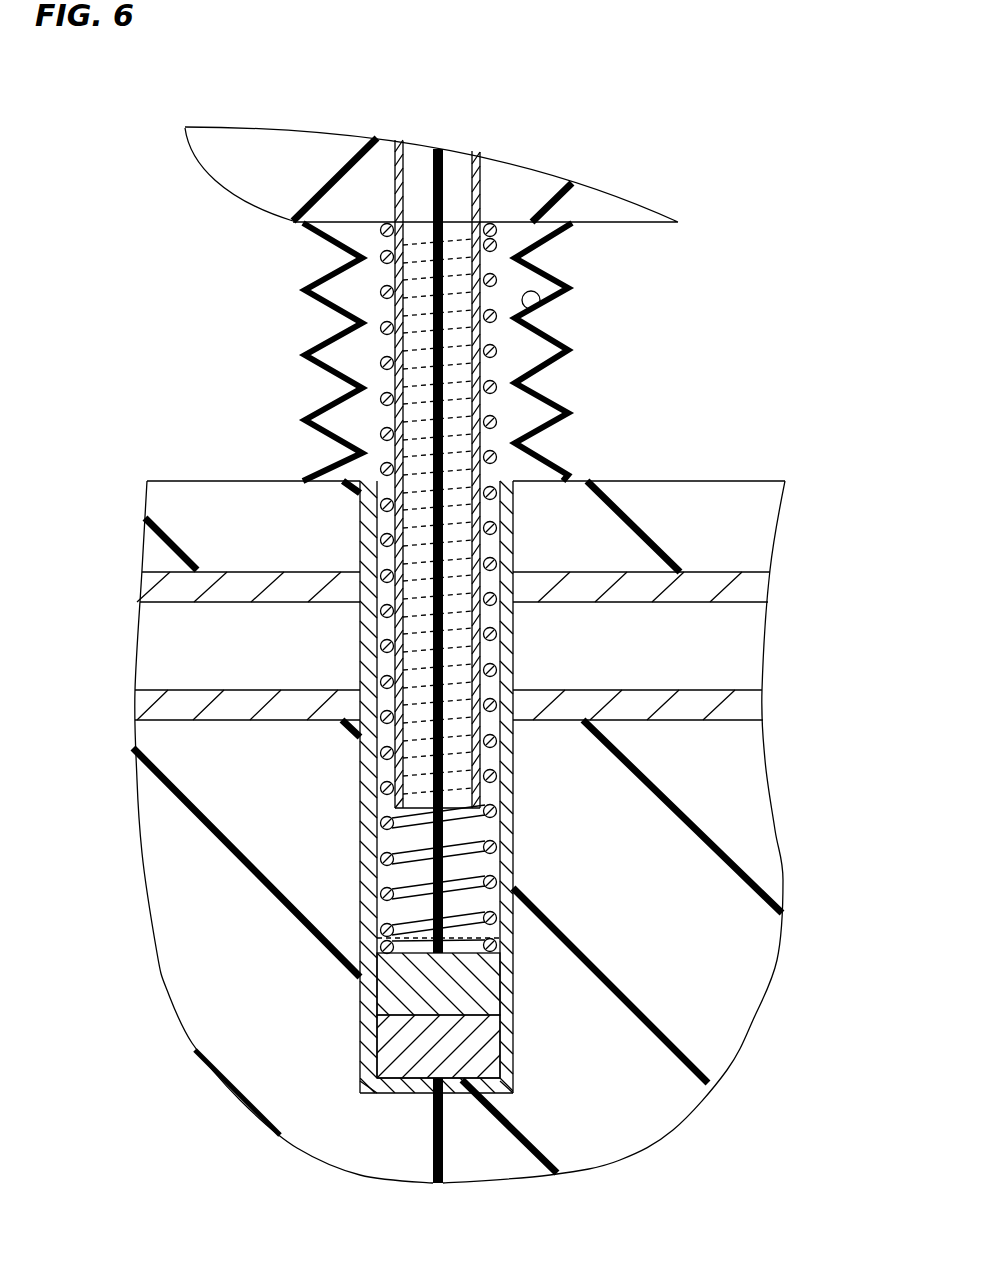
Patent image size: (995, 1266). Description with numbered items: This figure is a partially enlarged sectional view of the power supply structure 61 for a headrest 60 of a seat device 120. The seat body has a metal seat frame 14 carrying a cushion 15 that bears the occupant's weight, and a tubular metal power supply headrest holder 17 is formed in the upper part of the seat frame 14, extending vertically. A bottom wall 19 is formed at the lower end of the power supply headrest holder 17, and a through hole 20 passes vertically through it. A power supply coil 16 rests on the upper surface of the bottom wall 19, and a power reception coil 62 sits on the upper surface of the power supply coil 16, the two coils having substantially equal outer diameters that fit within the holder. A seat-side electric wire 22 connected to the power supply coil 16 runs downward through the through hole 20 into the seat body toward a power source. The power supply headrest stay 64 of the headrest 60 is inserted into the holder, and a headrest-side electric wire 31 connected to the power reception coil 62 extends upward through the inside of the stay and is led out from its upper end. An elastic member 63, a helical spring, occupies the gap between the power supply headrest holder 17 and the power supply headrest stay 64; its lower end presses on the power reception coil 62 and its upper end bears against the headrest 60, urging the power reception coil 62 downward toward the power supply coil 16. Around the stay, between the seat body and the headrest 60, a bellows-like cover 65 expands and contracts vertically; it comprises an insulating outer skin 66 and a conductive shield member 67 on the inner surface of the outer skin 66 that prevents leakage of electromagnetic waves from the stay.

The probe unit 120 is at (167, 228).
The headrest 60 is at (248, 188).
The cushion 15 is at (278, 507).
The seat frame 14 is at (230, 590).
The power supply headrest holder 17 is at (367, 653).
The bottom wall 19 is at (397, 1088).
The through hole 20 is at (430, 1093).
The power supply headrest stay 64 is at (390, 172).
The elastic member 63 is at (387, 895).
The headrest-side electric wire 31 is at (447, 187).
The seat-side electric wire 22 is at (445, 1132).
The power reception coil 62 is at (422, 991).
The power supply coil 16 is at (408, 1043).
The power supply structure 61 is at (114, 925).
The outer skin 66 is at (562, 282).
The shield member 67 is at (533, 315).
The cover 65 is at (668, 257).